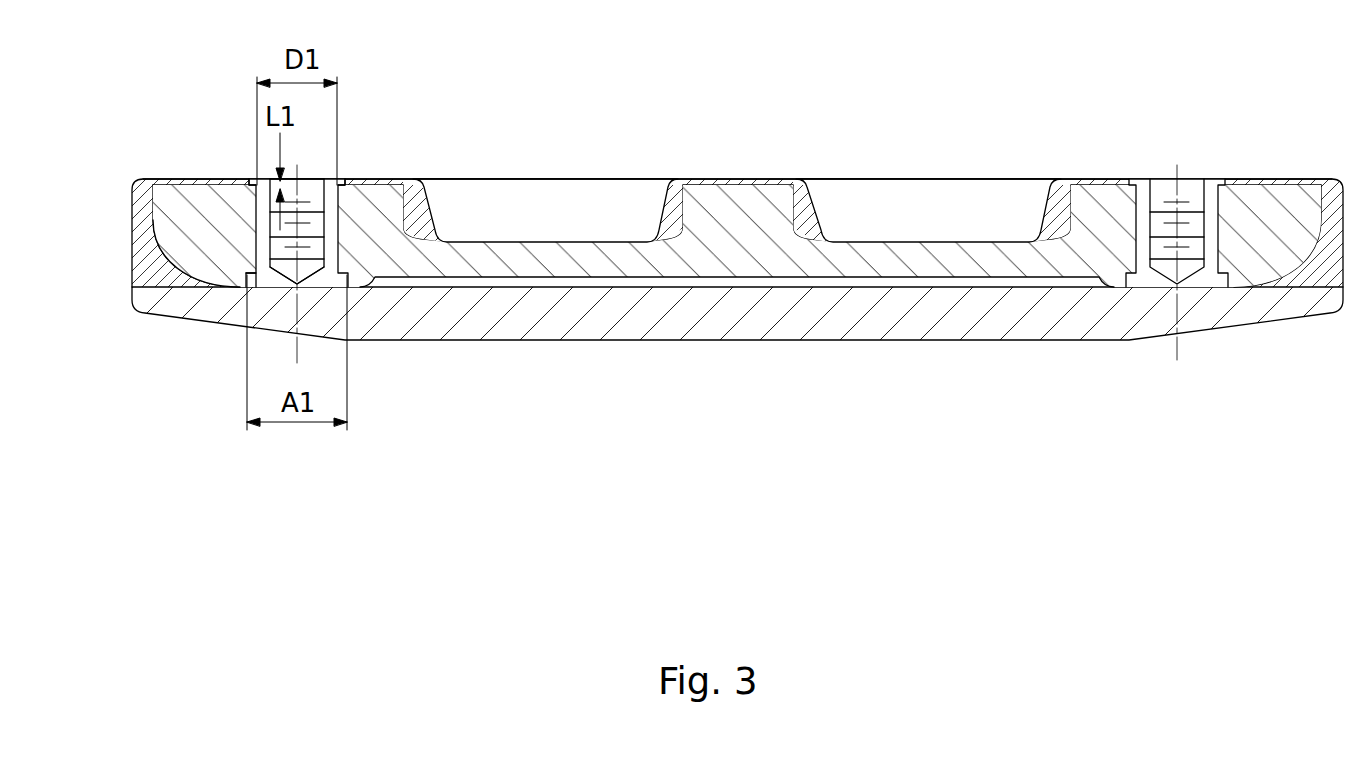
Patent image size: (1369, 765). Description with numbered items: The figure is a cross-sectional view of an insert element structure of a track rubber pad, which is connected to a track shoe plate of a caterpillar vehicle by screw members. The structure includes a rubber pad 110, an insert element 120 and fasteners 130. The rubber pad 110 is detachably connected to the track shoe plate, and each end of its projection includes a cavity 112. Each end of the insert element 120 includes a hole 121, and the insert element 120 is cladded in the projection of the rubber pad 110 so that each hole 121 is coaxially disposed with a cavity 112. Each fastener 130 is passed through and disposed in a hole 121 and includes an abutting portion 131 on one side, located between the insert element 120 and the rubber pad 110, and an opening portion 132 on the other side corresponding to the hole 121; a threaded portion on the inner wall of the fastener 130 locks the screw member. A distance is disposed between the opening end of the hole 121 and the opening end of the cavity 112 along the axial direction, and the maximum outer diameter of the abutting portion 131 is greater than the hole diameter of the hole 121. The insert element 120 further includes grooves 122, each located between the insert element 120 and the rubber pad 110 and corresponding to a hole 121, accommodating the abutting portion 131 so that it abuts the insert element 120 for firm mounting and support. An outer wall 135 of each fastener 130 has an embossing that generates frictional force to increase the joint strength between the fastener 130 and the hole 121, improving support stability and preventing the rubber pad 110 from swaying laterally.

The rubber pad 110 is at (985, 317).
The cavity 112 is at (267, 183).
The insert element 120 is at (915, 257).
The hole 121 is at (333, 183).
The groove 122 is at (320, 287).
The fastener 130 is at (333, 248).
The abutting portion 131 is at (258, 279).
The opening portion 132 is at (310, 183).
The outer wall 135 is at (252, 245).